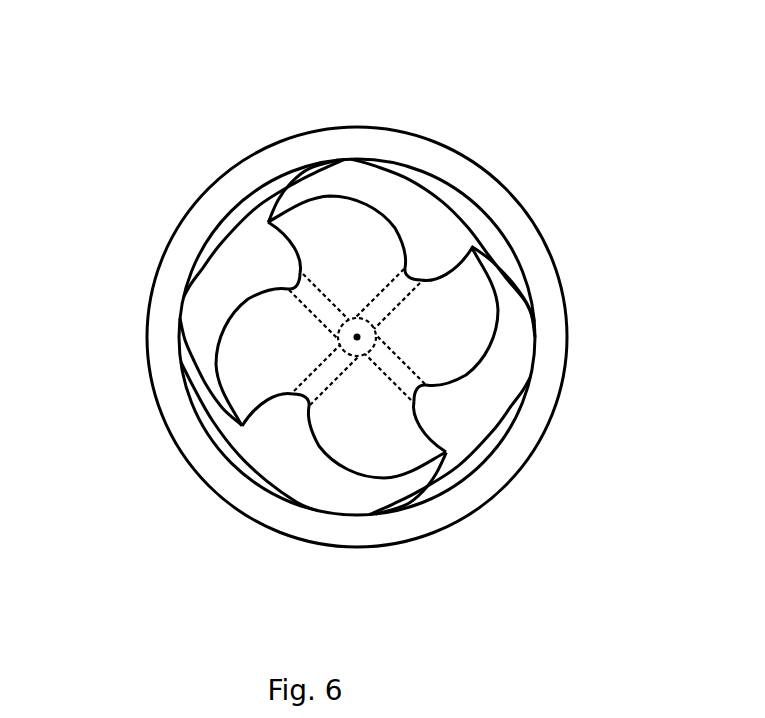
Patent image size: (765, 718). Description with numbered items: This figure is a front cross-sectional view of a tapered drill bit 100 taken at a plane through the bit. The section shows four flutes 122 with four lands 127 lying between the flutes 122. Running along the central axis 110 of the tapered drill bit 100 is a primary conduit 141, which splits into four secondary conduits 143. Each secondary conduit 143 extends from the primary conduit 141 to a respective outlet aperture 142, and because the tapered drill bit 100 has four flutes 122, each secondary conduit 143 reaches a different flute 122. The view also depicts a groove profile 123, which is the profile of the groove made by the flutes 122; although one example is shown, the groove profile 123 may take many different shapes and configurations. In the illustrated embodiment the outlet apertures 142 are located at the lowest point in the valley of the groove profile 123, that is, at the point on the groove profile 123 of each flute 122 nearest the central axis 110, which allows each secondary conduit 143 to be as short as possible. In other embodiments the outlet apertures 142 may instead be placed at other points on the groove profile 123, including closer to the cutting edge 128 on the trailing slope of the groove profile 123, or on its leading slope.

The tapered drill bit 100 is at (125, 66).
The central axis 110 is at (357, 337).
The flutes 122 is at (243, 240).
The groove profile 123 is at (407, 252).
The lands 127 is at (303, 188).
The cutting edge 128 is at (474, 247).
The primary conduit 141 is at (337, 335).
The outlet aperture 142 is at (294, 278).
The secondary conduits 143 is at (287, 287).